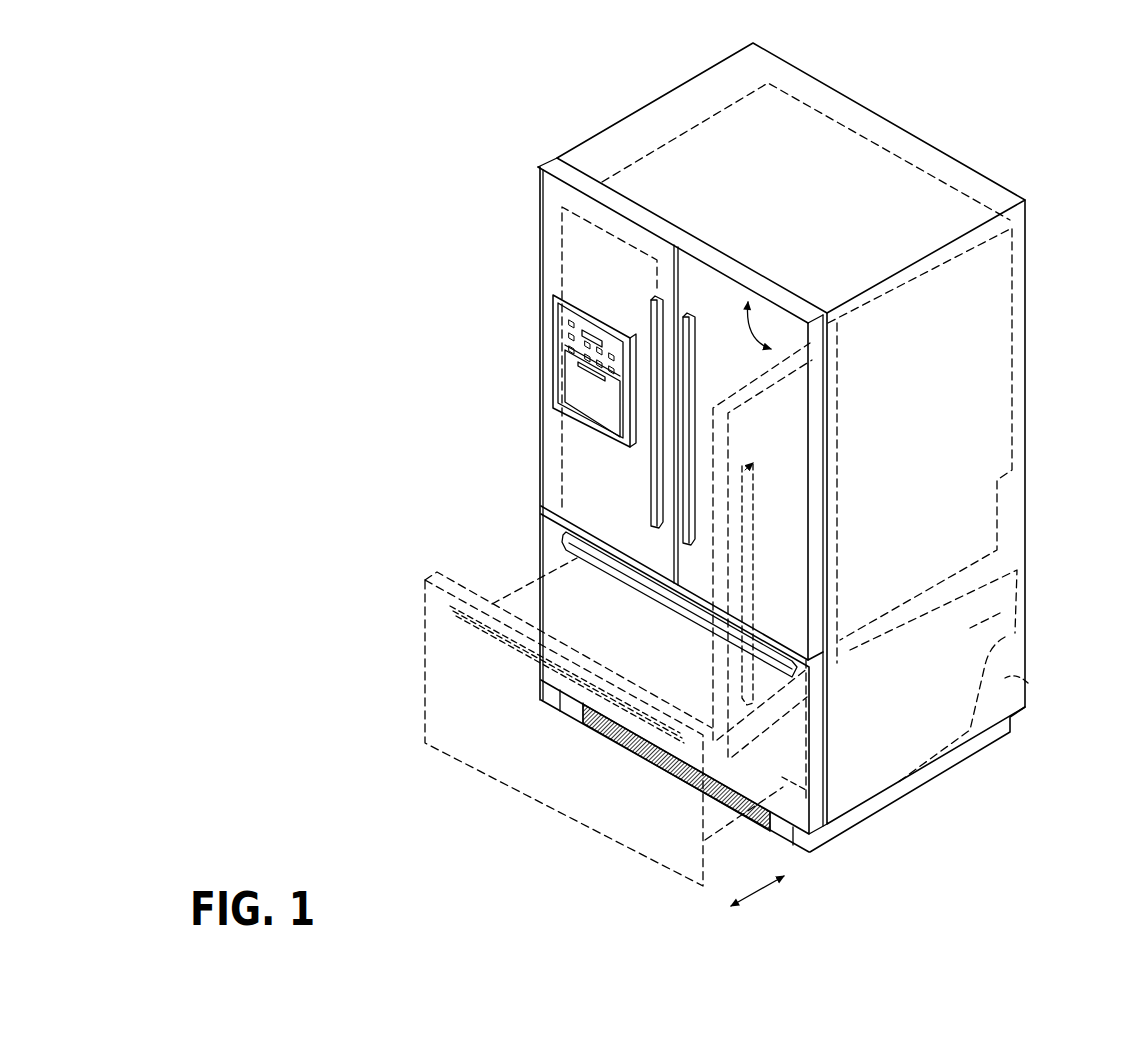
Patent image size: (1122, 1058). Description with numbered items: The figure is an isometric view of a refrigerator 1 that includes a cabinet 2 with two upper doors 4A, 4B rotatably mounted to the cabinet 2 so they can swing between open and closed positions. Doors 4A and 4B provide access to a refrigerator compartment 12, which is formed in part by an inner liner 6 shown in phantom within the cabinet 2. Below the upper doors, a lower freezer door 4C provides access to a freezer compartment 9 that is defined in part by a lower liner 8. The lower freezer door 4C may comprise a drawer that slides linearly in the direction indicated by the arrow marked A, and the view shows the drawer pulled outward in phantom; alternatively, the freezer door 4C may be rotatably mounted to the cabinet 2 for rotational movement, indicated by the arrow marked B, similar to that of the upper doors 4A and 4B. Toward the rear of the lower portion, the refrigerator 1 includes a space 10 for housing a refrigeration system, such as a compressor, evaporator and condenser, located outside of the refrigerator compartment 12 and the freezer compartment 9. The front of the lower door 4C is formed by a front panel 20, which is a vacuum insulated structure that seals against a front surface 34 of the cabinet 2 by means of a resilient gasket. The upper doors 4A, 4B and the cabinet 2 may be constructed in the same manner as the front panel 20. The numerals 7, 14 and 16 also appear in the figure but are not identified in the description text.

The refrigerator 1 is at (1034, 254).
The cabinet 2 is at (1027, 435).
The upper door 4A is at (552, 443).
The upper door 4B is at (818, 638).
The lower freezer door 4C is at (818, 807).
The inner liner 6 is at (990, 332).
The door liner 7 is at (577, 250).
The lower liner 8 is at (1027, 562).
The freezer compartment 9 is at (788, 850).
The space 10 is at (1028, 683).
The refrigerator compartment 12 is at (955, 388).
The condenser 14 is at (1027, 610).
The dispenser 16 is at (555, 353).
The front panel 20 is at (813, 842).
The front surface 34 is at (826, 777).